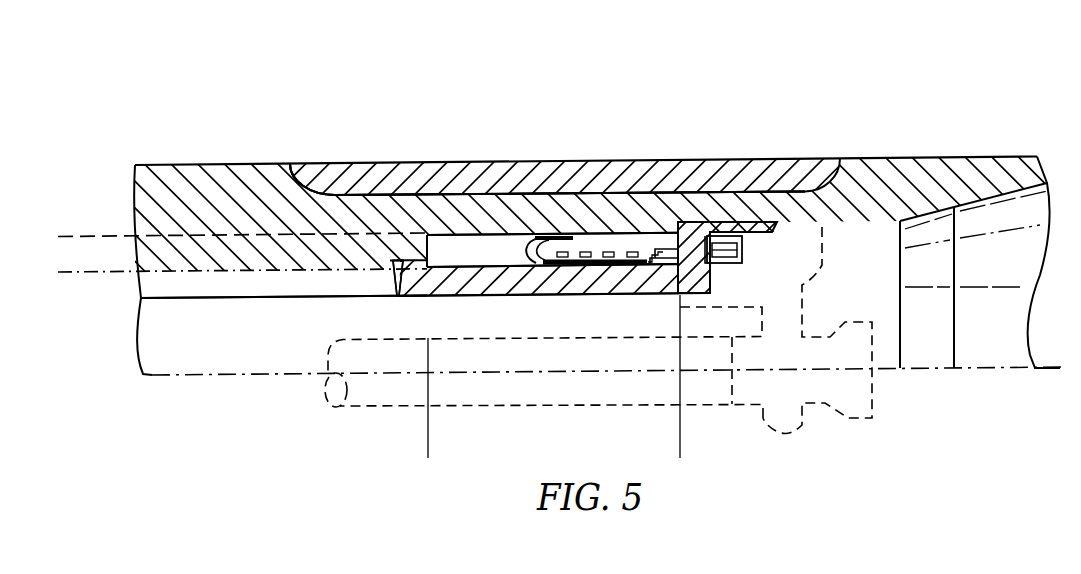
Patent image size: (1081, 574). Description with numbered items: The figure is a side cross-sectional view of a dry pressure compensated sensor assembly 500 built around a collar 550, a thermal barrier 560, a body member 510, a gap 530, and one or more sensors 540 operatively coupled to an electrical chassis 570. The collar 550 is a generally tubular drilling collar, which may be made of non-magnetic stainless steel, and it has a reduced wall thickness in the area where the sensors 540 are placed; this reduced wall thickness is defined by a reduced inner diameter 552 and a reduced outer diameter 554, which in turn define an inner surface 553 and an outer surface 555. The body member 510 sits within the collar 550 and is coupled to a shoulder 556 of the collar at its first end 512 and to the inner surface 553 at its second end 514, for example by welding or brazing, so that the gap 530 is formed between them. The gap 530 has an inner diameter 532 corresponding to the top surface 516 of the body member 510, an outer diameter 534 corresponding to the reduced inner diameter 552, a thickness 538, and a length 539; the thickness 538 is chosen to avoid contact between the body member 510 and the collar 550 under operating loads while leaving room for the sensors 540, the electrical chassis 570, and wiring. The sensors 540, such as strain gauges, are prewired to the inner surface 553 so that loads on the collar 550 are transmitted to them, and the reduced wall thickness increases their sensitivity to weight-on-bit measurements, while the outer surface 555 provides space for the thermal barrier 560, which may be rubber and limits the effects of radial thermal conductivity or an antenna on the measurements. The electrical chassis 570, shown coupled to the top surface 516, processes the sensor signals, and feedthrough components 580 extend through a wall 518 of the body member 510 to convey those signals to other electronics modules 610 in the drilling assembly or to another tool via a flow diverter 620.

The dry pressure compensated sensor assembly 500 is at (778, 52).
The body member 510 is at (431, 297).
The first end 512 is at (398, 277).
The second end 514 is at (751, 221).
The top surface 516 is at (538, 280).
The wall 518 is at (712, 265).
The gap 530 is at (458, 236).
The inner diameter 532 is at (504, 282).
The outer diameter 534 is at (505, 234).
The thickness 538 is at (98, 190).
The length 539 is at (680, 447).
The sensors 540 is at (528, 242).
The collar 550 is at (862, 159).
The reduced inner diameter 552 is at (413, 200).
The inner surface 553 is at (570, 194).
The reduced outer diameter 554 is at (328, 194).
The outer surface 555 is at (312, 180).
The shoulder 556 is at (378, 286).
The thermal barrier 560 is at (590, 170).
The electrical chassis 570 is at (600, 254).
The feedthrough components 580 is at (700, 224).
The electronics modules 610 is at (538, 393).
The flow diverter 620 is at (853, 398).